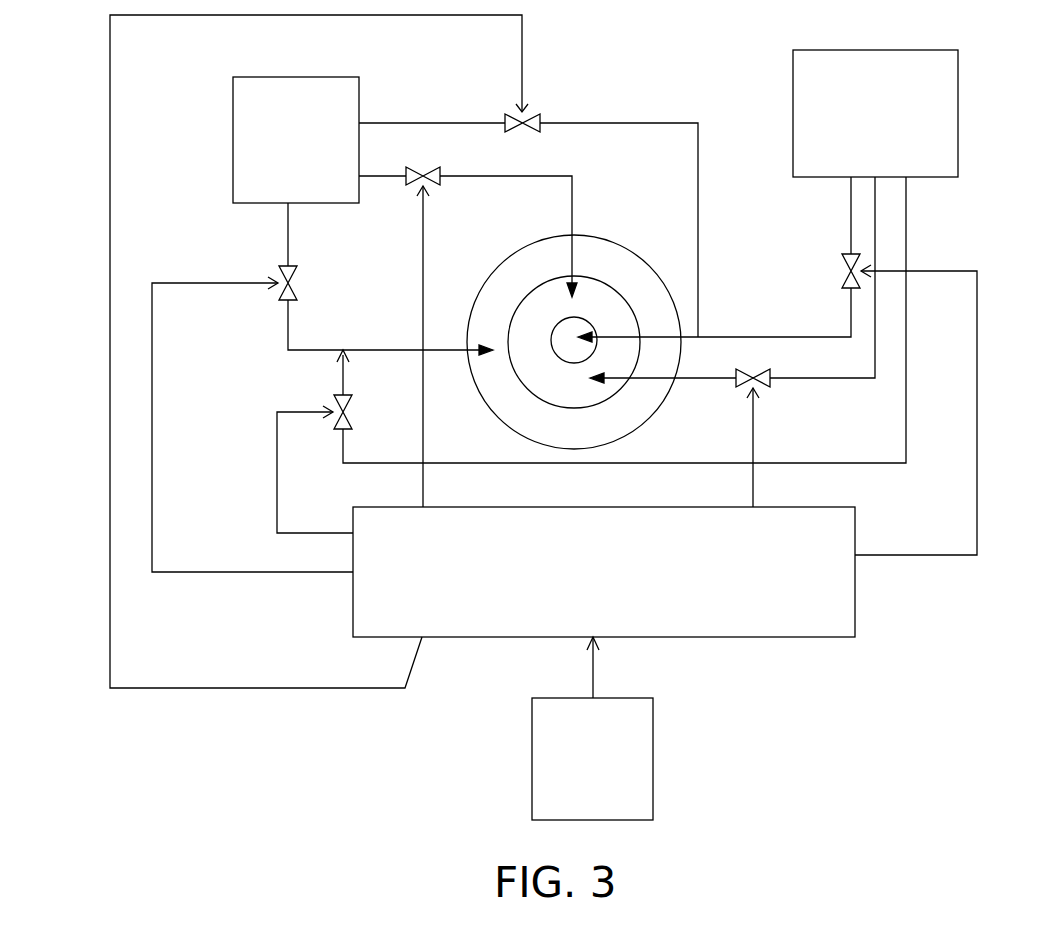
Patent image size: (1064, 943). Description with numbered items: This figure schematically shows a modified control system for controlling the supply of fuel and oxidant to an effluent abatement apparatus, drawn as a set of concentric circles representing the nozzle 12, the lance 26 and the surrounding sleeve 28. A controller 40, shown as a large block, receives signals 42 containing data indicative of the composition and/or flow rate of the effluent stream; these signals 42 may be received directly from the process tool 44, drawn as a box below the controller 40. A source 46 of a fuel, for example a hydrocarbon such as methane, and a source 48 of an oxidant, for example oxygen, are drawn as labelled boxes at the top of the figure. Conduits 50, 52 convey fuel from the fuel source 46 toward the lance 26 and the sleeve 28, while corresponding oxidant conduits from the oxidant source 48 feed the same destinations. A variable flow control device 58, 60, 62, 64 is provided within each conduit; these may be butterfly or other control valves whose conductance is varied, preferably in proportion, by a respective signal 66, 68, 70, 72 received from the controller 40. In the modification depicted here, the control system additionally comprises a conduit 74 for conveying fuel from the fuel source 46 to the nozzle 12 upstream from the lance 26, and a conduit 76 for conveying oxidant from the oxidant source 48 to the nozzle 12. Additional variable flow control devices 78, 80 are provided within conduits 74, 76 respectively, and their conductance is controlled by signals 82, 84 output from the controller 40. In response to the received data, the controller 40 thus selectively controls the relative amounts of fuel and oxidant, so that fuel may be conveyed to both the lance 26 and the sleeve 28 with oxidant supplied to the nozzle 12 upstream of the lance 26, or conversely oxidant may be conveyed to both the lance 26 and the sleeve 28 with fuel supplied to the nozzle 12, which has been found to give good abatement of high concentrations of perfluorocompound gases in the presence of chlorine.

The nozzle 12 is at (597, 275).
The lance 26 is at (584, 327).
The sleeve 28 is at (500, 402).
The controller 40 is at (748, 637).
The signals 42 is at (593, 668).
The process tool 44 is at (653, 755).
The source of a fuel 46 is at (233, 137).
The source of an oxidant 48 is at (958, 113).
The conduit 50 is at (440, 123).
The conduit 52 is at (288, 240).
The variable flow control device 58 is at (540, 118).
The variable flow control device 60 is at (298, 290).
The variable flow control device 62 is at (843, 265).
The variable flow control device 64 is at (352, 412).
The signal 66 is at (110, 412).
The signal 68 is at (152, 438).
The signal 70 is at (977, 478).
The signal 72 is at (277, 490).
The conduit 74 is at (503, 176).
The conduit 76 is at (845, 378).
The variable flow control device 78 is at (440, 172).
The variable flow control device 80 is at (770, 372).
The signal 82 is at (423, 253).
The signal 84 is at (753, 425).